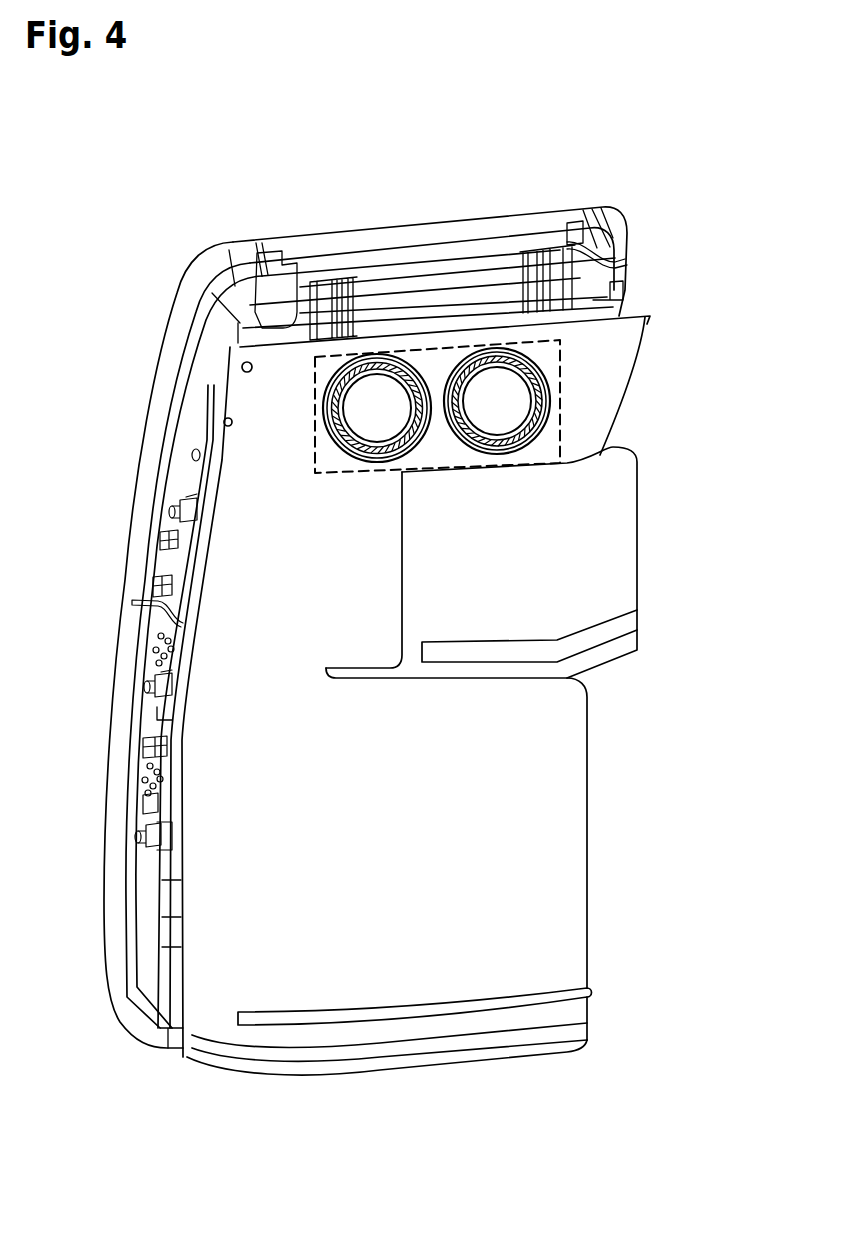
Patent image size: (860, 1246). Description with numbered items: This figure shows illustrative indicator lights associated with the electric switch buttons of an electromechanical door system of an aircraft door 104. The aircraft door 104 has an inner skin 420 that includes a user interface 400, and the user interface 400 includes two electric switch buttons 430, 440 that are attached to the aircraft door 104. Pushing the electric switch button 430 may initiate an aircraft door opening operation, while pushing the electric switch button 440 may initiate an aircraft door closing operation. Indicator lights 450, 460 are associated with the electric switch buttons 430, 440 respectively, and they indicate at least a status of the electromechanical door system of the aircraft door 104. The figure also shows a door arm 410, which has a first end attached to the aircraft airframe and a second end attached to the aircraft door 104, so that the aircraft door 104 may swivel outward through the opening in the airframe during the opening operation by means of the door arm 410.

The aircraft door 104 is at (675, 191).
The user interface 400 is at (560, 418).
The door arm 410 is at (620, 553).
The inner skin 420 is at (528, 796).
The electric switch button 430 is at (383, 378).
The electric switch button 440 is at (498, 380).
The indicator light 450 is at (330, 393).
The indicator light 460 is at (547, 386).